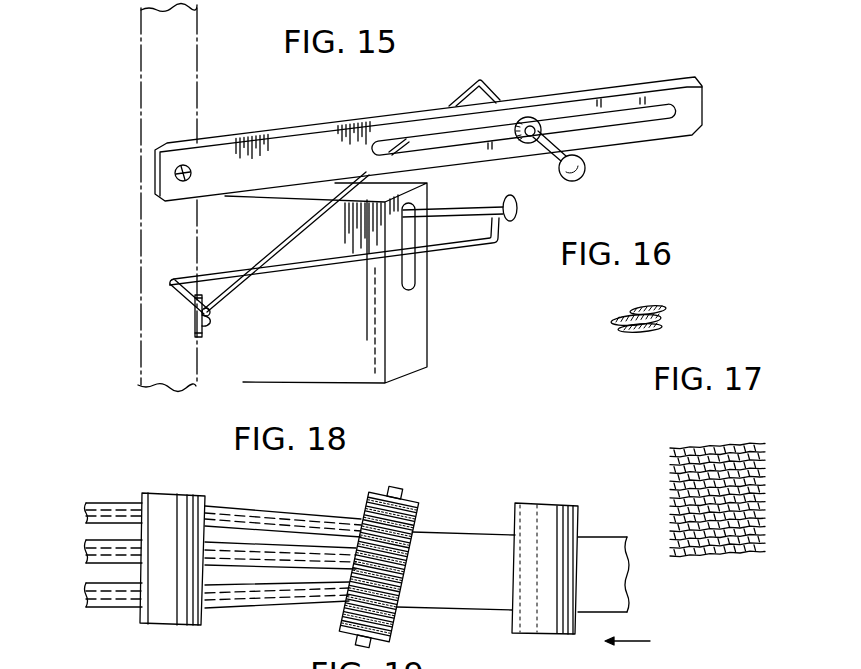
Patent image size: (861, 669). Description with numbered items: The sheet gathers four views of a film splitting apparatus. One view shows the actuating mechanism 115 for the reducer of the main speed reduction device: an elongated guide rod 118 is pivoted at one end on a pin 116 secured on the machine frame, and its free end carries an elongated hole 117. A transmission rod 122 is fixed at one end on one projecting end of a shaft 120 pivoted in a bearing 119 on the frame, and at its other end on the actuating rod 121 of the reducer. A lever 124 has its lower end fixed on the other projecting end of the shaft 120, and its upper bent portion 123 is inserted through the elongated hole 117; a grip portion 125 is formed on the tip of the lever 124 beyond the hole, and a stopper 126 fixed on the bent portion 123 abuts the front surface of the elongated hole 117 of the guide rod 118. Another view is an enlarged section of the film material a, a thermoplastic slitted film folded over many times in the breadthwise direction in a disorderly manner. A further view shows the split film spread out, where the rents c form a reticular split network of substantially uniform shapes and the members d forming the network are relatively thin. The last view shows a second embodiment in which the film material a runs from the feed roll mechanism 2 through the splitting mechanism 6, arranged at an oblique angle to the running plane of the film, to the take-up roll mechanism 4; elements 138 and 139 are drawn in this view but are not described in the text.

In FIG. 15, the actuating mechanism 115 is at (366, 177).
In FIG. 15, the pin 116 is at (184, 165).
In FIG. 15, the elongated hole 117 is at (645, 118).
In FIG. 15, the guide rod 118 is at (641, 80).
In FIG. 15, the bearing 119 is at (205, 335).
In FIG. 15, the shaft 120 is at (195, 298).
In FIG. 15, the actuating rod 121 is at (438, 212).
In FIG. 15, the transmission rod 122 is at (312, 265).
In FIG. 15, the bent portion 123 is at (502, 92).
In FIG. 15, the lever 124 is at (288, 240).
In FIG. 15, the grip portion 125 is at (578, 182).
In FIG. 15, the stopper 126 is at (525, 145).
In FIG. 16, the film material a is at (665, 306).
In FIG. 18, the film material a is at (462, 532).
In FIG. 17, the rents c is at (680, 458).
In FIG. 17, the members d is at (680, 480).
In FIG. 18, the feed roll mechanism 2 is at (563, 503).
In FIG. 18, the take-up roll mechanism 4 is at (163, 494).
In FIG. 18, the splitting mechanism 6 is at (407, 495).
In FIG. 18, the tape 138 is at (303, 533).
In FIG. 18, the tape 139 is at (303, 583).